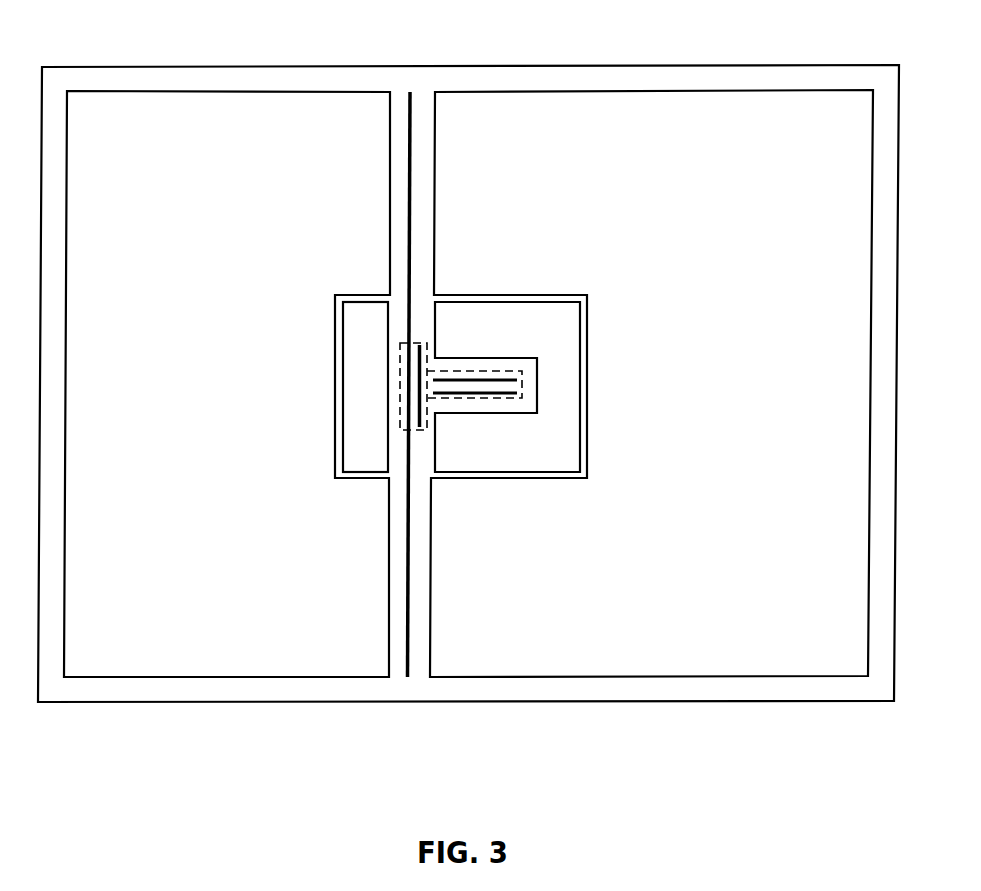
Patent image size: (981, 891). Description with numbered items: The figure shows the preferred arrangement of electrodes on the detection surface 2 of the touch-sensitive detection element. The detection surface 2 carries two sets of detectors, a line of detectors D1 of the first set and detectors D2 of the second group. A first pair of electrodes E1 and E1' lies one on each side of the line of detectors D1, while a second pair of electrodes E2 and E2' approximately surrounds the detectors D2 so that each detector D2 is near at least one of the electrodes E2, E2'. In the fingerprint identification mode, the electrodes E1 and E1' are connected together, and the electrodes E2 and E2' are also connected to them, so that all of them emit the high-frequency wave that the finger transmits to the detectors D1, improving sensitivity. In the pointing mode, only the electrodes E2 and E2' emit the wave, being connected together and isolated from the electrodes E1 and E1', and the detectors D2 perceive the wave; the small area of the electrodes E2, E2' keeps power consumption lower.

The detection surface 2 is at (828, 65).
The electrode E1 is at (227, 343).
The electrode E1' is at (651, 343).
The electrode E2 is at (346, 423).
The electrode E2' is at (507, 423).
The detectors of the first set D1 is at (405, 675).
The detectors of the second group D2 is at (502, 371).